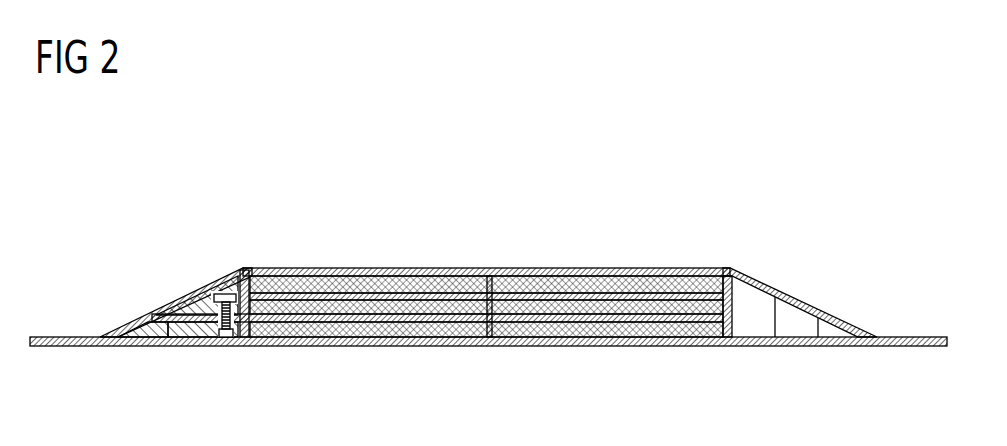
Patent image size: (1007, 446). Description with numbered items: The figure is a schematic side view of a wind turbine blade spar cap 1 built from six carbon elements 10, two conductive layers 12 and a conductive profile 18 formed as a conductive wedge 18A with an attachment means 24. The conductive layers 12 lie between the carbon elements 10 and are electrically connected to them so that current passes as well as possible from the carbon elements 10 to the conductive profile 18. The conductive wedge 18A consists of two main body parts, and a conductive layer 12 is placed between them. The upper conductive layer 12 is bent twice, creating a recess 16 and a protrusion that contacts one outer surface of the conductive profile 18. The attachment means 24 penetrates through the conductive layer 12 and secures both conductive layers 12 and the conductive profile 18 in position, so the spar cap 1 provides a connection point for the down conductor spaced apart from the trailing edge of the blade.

The wind turbine blade spar cap 1 is at (166, 206).
The carbon elements 10 is at (335, 328).
The conductive layers 12 is at (190, 315).
The recess 16 is at (250, 303).
The conductive profile 18 is at (203, 330).
The conductive wedge 18A is at (152, 330).
The attachment means 24 is at (223, 294).